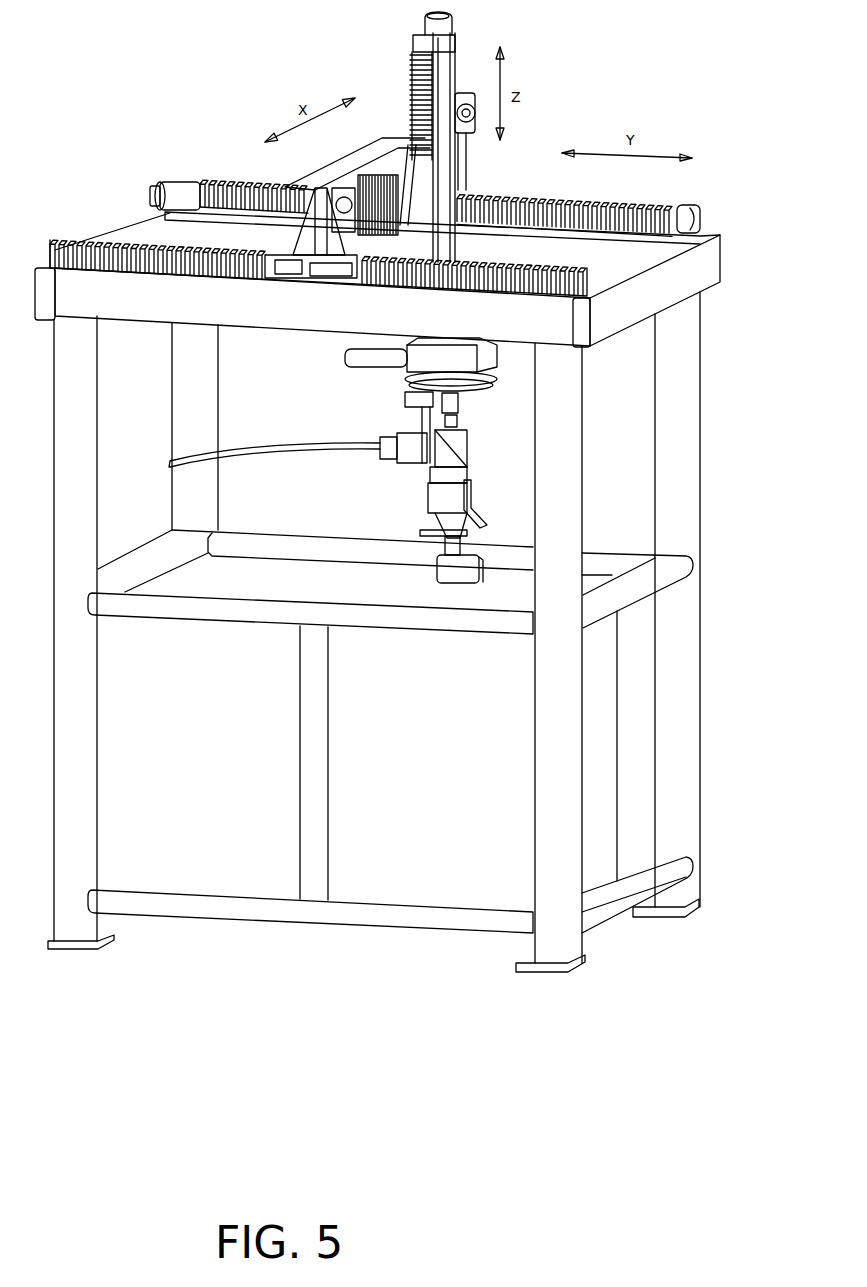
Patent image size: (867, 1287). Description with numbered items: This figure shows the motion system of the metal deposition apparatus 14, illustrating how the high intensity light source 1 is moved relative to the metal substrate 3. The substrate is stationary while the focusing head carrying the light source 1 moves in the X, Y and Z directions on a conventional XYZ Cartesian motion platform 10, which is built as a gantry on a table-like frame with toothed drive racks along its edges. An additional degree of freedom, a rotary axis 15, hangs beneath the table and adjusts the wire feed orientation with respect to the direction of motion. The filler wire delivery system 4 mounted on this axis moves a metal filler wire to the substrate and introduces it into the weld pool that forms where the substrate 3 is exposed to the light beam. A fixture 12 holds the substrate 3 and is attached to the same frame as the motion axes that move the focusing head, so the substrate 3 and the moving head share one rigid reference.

The high intensity light source 1 is at (185, 457).
The metal substrate 3 is at (463, 547).
The filler wire delivery system 4 is at (493, 517).
The XYZ Cartesian motion platform 10 is at (695, 203).
The fixture 12 is at (443, 573).
The metal deposition apparatus 14 is at (467, 448).
The rotary axis 15 is at (497, 355).